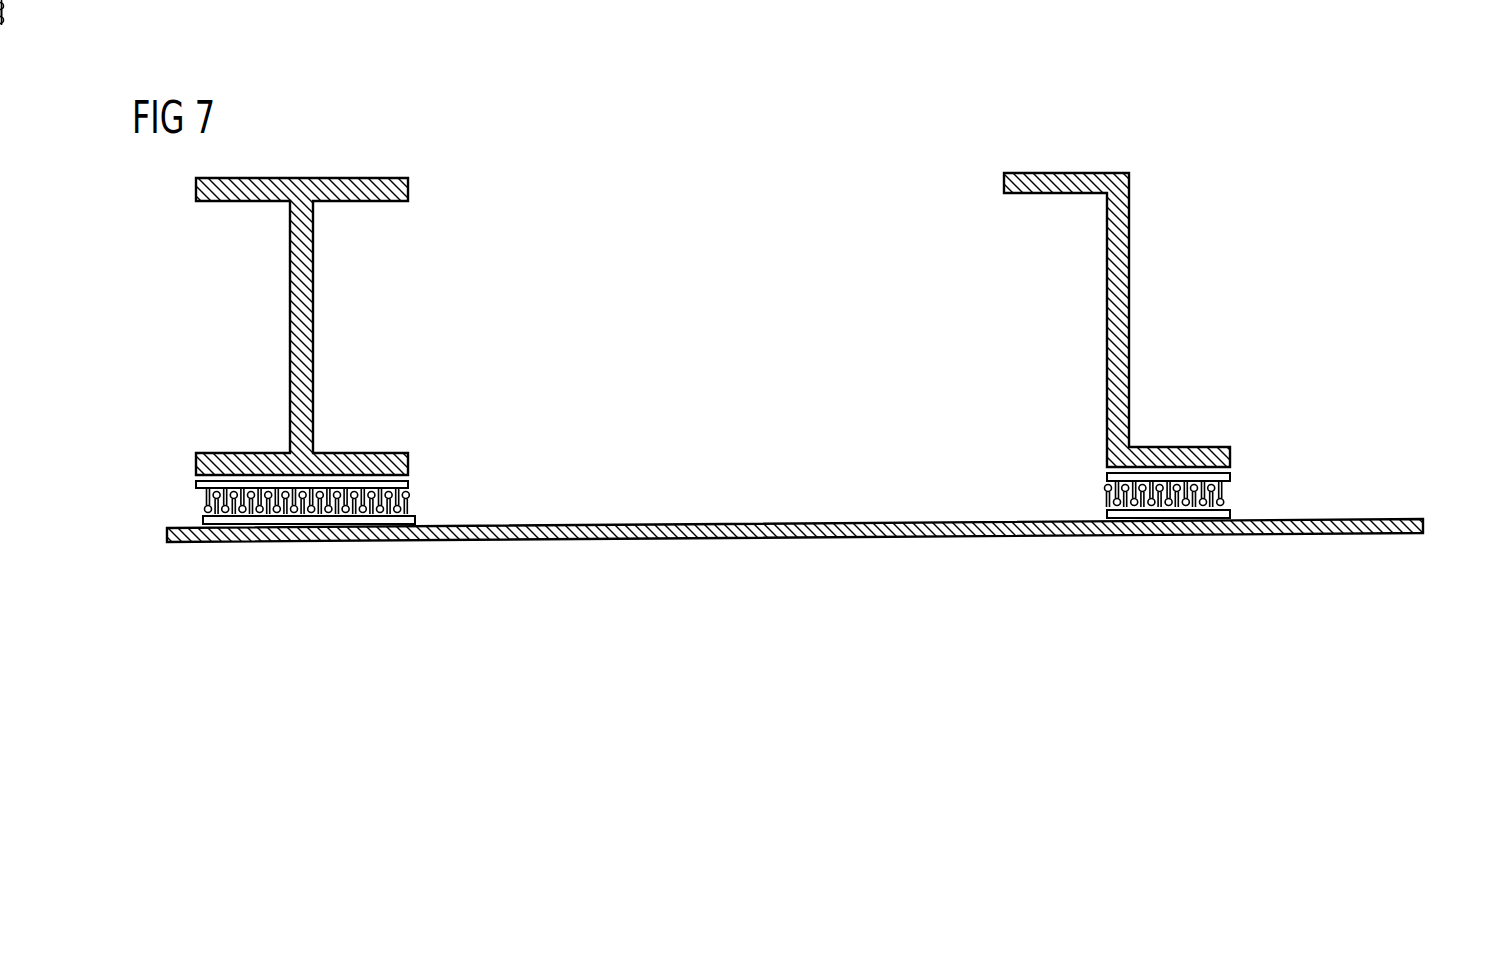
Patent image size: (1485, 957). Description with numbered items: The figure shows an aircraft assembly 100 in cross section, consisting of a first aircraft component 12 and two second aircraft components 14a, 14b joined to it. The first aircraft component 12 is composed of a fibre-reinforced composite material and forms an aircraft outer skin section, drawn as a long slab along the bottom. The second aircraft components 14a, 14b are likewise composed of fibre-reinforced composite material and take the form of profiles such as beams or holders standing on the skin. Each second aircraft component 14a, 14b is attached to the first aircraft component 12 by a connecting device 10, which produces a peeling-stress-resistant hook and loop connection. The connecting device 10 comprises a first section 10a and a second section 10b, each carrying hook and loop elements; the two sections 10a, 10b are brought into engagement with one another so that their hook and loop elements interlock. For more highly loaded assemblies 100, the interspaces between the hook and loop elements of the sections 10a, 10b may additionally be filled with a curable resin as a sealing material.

The aircraft assembly 100 is at (711, 271).
The second aircraft component 14a is at (313, 325).
The second aircraft component 14b is at (1129, 325).
The first aircraft component 12 is at (815, 523).
The connecting device 10 is at (647, 262).
The first section 10a is at (422, 493).
The second section 10b is at (196, 484).